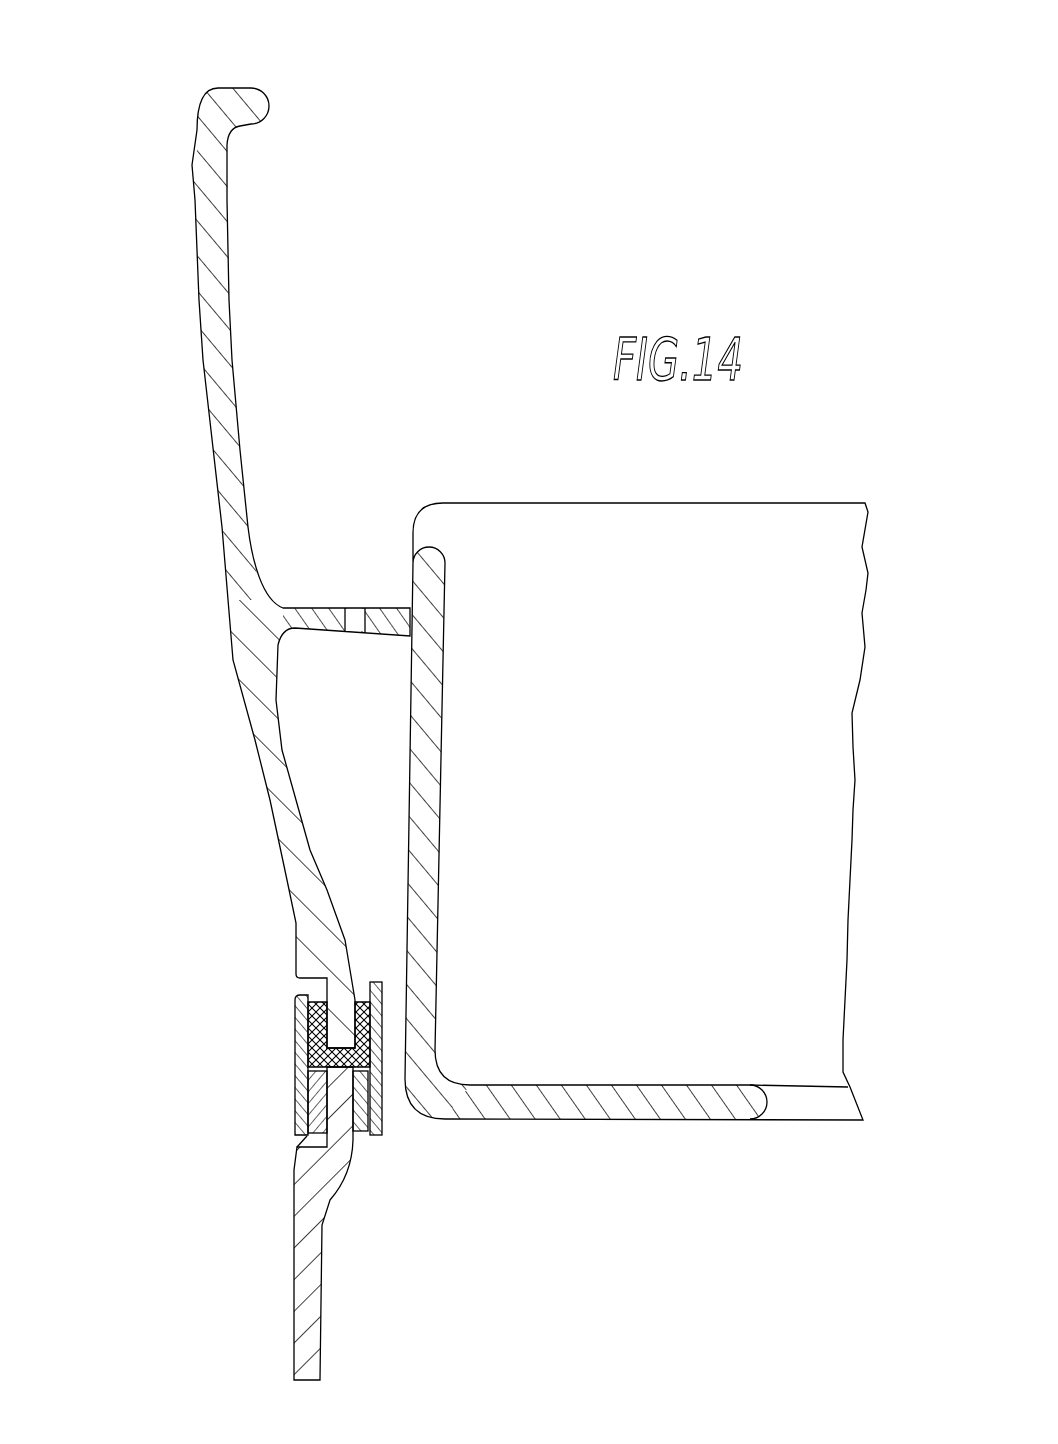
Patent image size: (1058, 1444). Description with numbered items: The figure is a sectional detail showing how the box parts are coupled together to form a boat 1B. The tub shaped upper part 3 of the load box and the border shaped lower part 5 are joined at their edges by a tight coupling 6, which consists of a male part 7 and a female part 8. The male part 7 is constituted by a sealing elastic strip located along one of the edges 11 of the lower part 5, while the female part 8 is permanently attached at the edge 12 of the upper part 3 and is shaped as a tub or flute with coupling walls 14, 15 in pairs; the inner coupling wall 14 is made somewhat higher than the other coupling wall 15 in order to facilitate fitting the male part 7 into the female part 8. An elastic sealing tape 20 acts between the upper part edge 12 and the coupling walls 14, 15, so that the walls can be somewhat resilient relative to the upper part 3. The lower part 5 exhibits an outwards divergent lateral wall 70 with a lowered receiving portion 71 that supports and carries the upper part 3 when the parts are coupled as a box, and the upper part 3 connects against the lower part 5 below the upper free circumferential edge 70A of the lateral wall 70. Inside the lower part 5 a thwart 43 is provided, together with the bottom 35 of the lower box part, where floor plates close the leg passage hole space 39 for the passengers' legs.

The boat 1B is at (487, 258).
The lateral wall 70 is at (197, 280).
The upper free circumferential edge 70A is at (243, 110).
The lower part 5 is at (272, 767).
The edge 11 is at (288, 815).
The lowered receiving portion 71 is at (375, 600).
The coupling wall 14 is at (378, 984).
The thwart 43 is at (657, 770).
The bottom 35 is at (592, 1080).
The hole space 39 is at (772, 1112).
The coupling wall 15 is at (303, 1002).
The male part 7 is at (312, 1058).
The elastic sealing tape 20 is at (305, 1138).
The upper part 3 is at (306, 1284).
The edge 12 is at (305, 1258).
The coupling 6 is at (257, 1118).
The female part 8 is at (390, 1123).